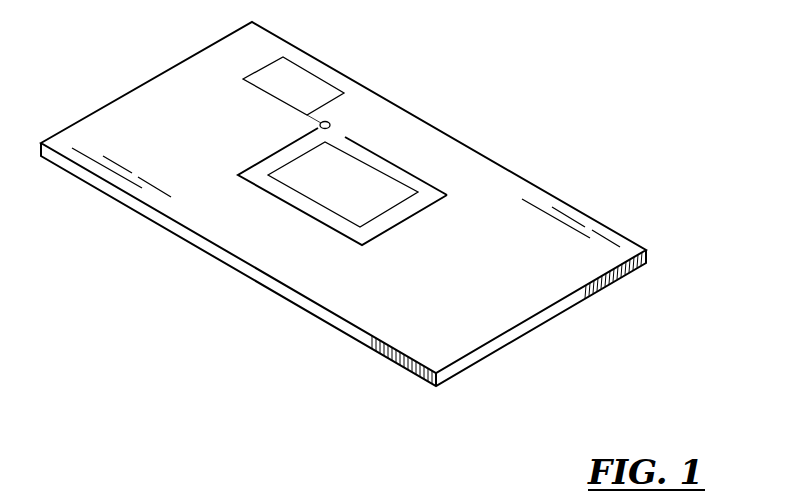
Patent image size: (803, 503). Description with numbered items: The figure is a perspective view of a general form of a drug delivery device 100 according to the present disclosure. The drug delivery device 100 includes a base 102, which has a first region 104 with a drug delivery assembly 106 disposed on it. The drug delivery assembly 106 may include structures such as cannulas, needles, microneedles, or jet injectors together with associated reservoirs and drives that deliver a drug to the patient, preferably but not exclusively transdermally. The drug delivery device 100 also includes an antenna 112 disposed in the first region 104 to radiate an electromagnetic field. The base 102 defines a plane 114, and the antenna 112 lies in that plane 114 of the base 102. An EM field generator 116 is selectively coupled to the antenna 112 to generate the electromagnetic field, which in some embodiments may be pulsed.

The drug delivery device 100 is at (417, 68).
The base 102 is at (602, 223).
The first region 104 is at (432, 163).
The drug delivery assembly 106 is at (312, 170).
The antenna 112 is at (393, 228).
The plane 114 is at (170, 92).
The EM field generator 116 is at (311, 89).